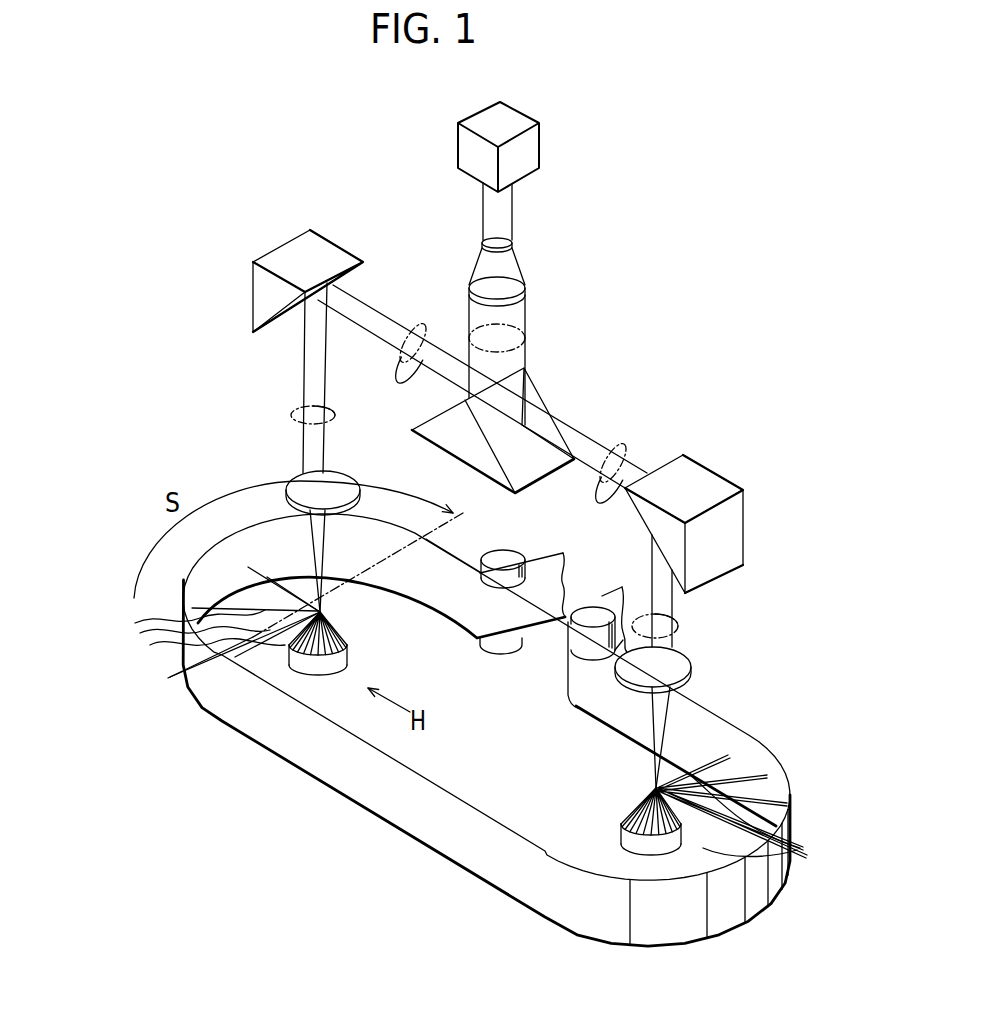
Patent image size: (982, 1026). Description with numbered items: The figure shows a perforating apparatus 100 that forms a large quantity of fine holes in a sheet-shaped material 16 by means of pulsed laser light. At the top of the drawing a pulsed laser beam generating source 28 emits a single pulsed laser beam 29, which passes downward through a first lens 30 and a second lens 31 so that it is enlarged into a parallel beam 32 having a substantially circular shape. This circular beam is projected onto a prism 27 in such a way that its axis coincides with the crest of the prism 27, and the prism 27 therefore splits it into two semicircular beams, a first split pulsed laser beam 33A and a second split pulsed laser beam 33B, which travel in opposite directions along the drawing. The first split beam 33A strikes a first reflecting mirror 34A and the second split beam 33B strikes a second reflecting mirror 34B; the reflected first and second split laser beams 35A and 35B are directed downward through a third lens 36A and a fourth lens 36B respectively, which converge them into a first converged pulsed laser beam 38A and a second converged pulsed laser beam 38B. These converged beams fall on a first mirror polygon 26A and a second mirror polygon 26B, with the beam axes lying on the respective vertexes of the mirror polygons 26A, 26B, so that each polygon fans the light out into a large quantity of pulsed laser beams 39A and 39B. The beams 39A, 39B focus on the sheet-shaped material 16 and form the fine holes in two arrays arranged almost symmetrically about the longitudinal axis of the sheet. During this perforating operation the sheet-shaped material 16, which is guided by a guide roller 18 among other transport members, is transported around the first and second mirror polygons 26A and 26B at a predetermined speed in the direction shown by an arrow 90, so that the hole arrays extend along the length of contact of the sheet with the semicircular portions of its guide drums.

The perforating apparatus 100 is at (730, 186).
The sheet-shaped material 16 is at (405, 806).
The guide roller 18 is at (505, 558).
The first mirror polygon 26A is at (330, 688).
The second mirror polygon 26B is at (600, 847).
The prism 27 is at (437, 420).
The pulsed laser beam generating source 28 is at (528, 153).
The pulsed laser beam 29 is at (514, 212).
The first lens 30 is at (502, 243).
The second lens 31 is at (478, 290).
The parallel beam 32 is at (517, 335).
The first split pulsed laser beam 33A is at (422, 332).
The second split pulsed laser beam 33B is at (622, 440).
The first reflecting mirror 34A is at (282, 252).
The second reflecting mirror 34B is at (700, 478).
The first reflected split laser beam 35A is at (307, 412).
The second reflected split laser beam 35B is at (690, 624).
The third lens 36A is at (305, 480).
The fourth lens 36B is at (678, 672).
The first converged pulsed laser beam 38A is at (327, 542).
The second converged pulsed laser beam 38B is at (650, 756).
The pulsed laser beams 39A is at (180, 660).
The pulsed laser beams 39B is at (759, 819).
The arrow 90 is at (617, 582).